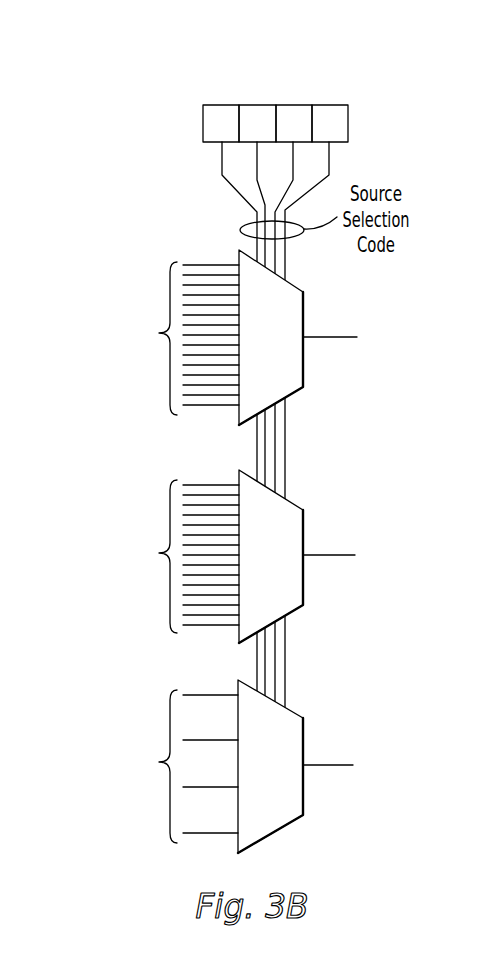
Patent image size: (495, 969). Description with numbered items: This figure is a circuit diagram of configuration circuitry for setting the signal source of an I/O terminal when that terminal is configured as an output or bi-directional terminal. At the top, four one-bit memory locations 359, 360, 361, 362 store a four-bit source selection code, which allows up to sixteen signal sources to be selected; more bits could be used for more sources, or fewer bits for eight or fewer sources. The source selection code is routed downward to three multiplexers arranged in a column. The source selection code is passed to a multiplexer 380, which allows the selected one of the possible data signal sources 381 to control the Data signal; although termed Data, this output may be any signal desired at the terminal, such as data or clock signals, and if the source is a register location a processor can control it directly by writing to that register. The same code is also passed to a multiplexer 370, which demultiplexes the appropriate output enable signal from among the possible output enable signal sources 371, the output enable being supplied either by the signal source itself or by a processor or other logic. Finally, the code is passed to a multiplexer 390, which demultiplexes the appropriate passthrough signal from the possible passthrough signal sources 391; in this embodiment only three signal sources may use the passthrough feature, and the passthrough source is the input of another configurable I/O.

The one-bit memory location 359 is at (222, 105).
The one-bit memory location 360 is at (258, 105).
The one-bit memory location 361 is at (293, 105).
The one-bit memory location 362 is at (330, 105).
The multiplexer 370 is at (305, 298).
The possible output enable signal sources 371 is at (90, 409).
The multiplexer 380 is at (305, 515).
The possible data signal sources 381 is at (90, 616).
The multiplexer 390 is at (305, 723).
The possible passthrough signal sources 391 is at (88, 814).